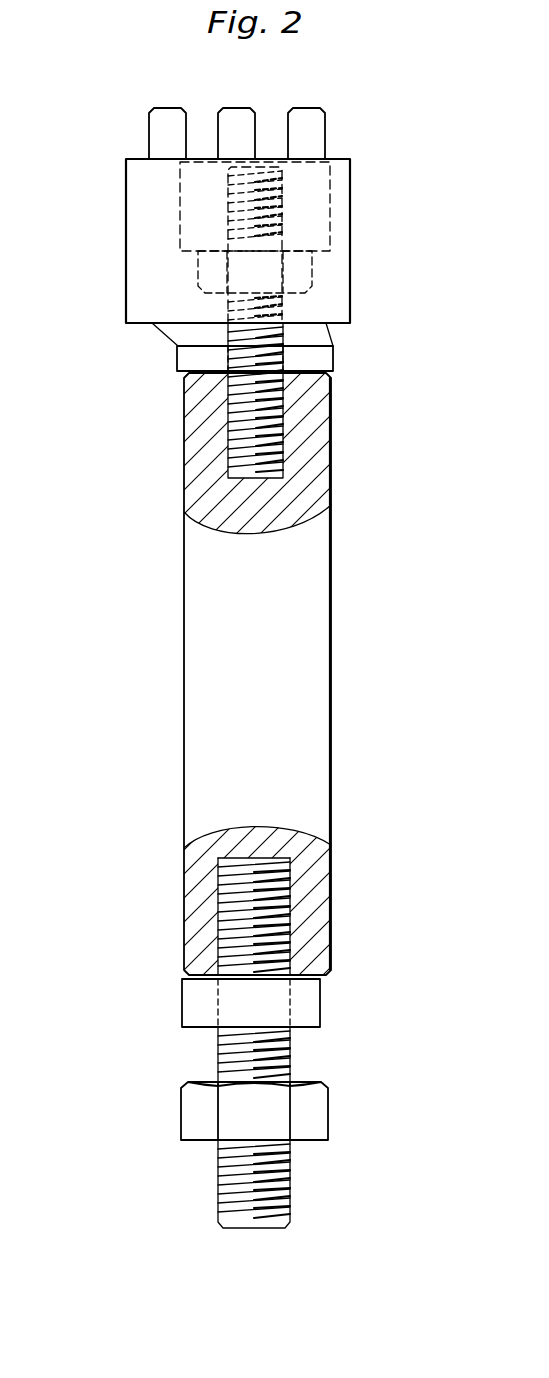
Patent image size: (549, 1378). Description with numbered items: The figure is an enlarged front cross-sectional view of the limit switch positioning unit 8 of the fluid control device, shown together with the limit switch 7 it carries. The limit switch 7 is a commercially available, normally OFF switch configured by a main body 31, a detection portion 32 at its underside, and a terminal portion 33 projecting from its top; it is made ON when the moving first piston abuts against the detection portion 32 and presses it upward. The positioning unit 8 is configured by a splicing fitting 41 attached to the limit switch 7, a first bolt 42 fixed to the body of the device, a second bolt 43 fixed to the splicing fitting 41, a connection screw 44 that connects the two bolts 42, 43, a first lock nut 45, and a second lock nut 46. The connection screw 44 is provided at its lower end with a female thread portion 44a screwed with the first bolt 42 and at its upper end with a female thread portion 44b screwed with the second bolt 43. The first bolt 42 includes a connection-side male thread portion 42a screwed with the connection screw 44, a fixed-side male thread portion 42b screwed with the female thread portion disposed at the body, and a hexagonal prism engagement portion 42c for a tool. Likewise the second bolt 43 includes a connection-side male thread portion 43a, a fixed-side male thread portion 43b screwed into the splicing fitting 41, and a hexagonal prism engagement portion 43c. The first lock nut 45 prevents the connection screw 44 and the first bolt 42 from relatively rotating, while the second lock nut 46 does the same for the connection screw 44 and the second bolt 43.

The limit switch 7 is at (240, 215).
The limit switch positioning unit 8 is at (274, 689).
The main body 31 is at (135, 233).
The detection portion 32 is at (178, 332).
The terminal portion 33 is at (150, 130).
The splicing fitting 41 is at (330, 193).
The first bolt 42 is at (237, 1043).
The connection-side male thread portion 42a is at (230, 945).
The fixed-side male thread portion 42b is at (227, 1180).
The engagement portion 42c is at (188, 1110).
The second bolt 43 is at (227, 322).
The connection-side male thread portion 43a is at (240, 397).
The fixed-side male thread portion 43b is at (237, 192).
The engagement portion 43c is at (197, 270).
The connection screw 44 is at (274, 689).
The female thread portion 44a is at (288, 879).
The female thread portion 44b is at (280, 457).
The first lock nut 45 is at (320, 1002).
The second lock nut 46 is at (333, 360).